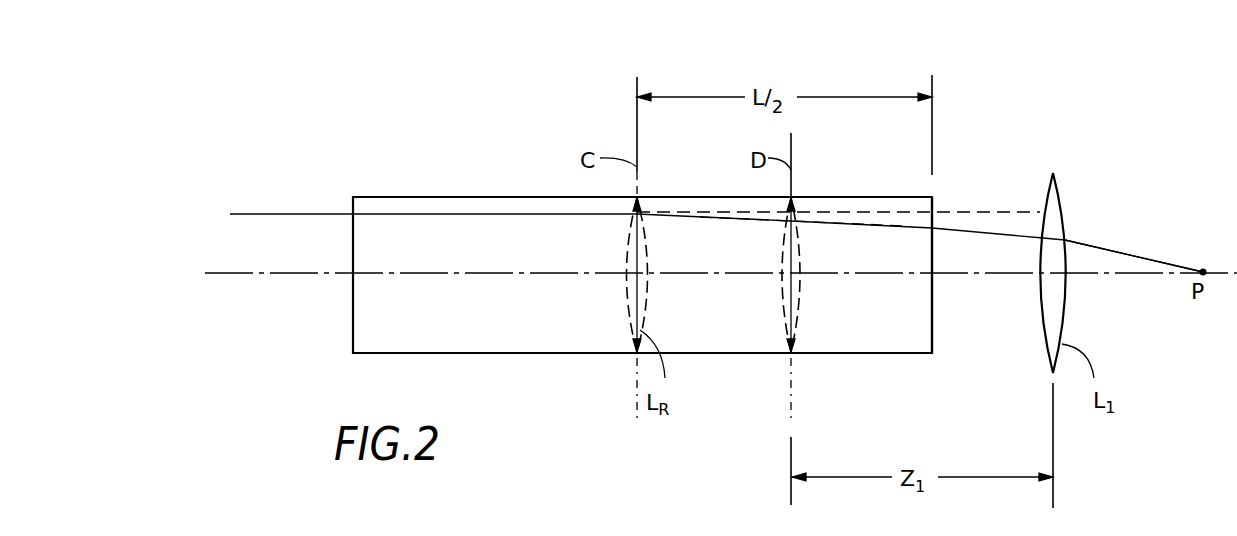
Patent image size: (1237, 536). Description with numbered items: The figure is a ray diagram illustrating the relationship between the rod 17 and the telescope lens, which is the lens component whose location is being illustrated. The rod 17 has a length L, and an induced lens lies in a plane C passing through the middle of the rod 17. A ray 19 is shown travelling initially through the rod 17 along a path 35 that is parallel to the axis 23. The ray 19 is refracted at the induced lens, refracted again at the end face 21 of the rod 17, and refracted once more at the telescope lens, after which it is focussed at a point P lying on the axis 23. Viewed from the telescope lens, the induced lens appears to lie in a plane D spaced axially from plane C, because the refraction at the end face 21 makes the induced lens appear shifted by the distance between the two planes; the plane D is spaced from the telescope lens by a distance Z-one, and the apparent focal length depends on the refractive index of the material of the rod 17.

The rod 17 is at (541, 338).
The ray 19 is at (299, 213).
The end face 21 is at (935, 333).
The axis 23 is at (1163, 274).
The path 35 is at (967, 210).